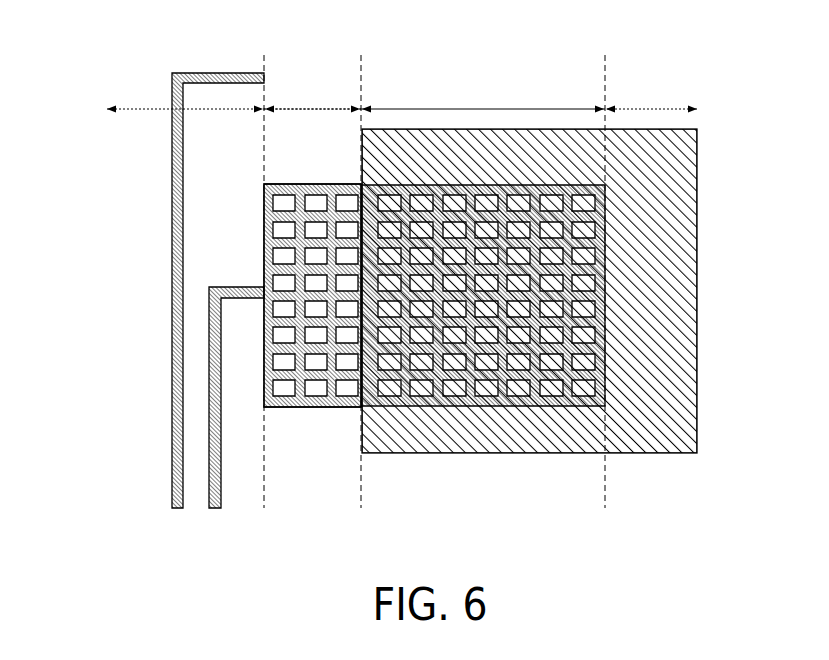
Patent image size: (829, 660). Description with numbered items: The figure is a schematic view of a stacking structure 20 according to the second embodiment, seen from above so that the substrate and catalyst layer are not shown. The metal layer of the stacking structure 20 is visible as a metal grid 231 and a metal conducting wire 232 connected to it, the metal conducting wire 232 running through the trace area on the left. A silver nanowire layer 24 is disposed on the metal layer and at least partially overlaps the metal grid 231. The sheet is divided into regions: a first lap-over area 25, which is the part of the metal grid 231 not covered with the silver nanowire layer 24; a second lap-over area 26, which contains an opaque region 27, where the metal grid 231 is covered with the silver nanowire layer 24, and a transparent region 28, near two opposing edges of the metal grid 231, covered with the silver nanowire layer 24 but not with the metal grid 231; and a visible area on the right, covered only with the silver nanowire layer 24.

The stacking structure 20 is at (100, 62).
The silver nanowire layer 24 is at (657, 428).
The first lap-over area 25 is at (312, 89).
The second lap-over area 26 is at (483, 89).
The opaque region 27 is at (416, 407).
The transparent region 28 is at (503, 428).
The metal grid 231 is at (296, 408).
The metal conducting wire 232 is at (209, 433).